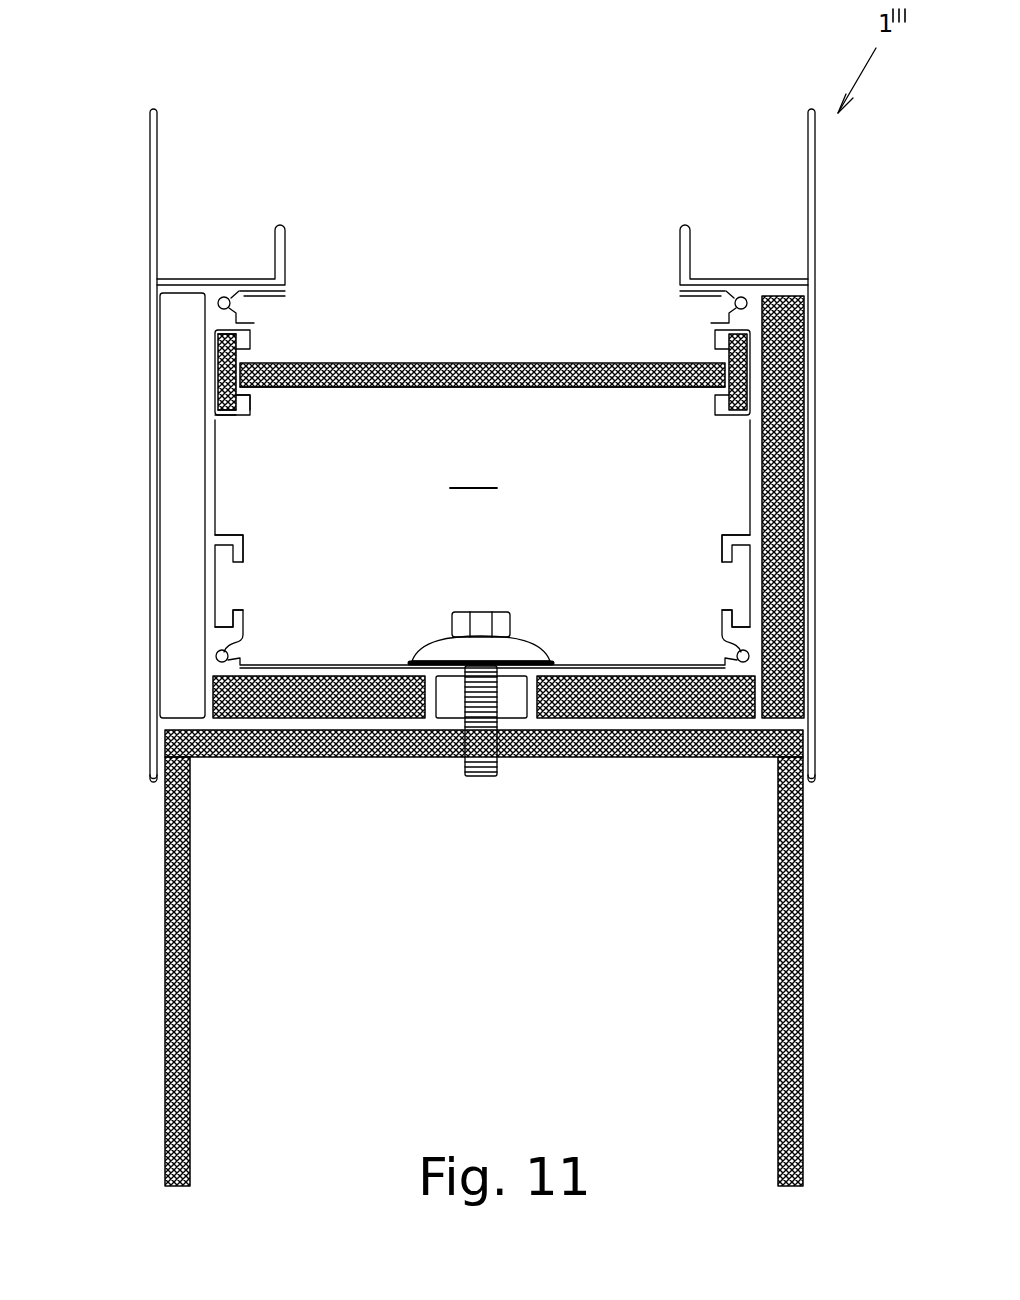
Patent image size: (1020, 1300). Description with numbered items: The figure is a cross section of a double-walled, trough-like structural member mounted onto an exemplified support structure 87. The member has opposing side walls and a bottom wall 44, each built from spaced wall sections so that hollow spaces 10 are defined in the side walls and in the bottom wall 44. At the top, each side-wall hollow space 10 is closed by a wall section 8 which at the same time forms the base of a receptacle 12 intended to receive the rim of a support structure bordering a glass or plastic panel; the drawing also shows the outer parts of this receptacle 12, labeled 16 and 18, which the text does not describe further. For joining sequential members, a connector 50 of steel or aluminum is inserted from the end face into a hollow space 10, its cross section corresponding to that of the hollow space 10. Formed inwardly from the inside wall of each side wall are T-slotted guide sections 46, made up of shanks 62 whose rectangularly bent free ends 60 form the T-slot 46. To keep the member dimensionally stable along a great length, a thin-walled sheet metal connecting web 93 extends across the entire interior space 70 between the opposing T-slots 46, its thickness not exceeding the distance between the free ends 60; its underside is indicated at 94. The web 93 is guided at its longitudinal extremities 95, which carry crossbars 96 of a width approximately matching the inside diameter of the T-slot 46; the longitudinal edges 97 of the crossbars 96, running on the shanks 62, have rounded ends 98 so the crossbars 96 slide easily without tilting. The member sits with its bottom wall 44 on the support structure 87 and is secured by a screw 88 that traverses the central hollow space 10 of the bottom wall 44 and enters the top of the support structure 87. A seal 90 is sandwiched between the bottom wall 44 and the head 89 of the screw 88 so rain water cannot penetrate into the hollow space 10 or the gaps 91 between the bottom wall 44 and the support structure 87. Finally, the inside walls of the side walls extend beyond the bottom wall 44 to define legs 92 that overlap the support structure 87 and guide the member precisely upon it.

The wall section 8 is at (178, 295).
The hollow space 10 is at (178, 505).
The receptacle 12 is at (217, 277).
The lip 16 is at (283, 232).
The outer channel 18 is at (152, 148).
The bottom wall 44 is at (302, 670).
The T-slotted guide section 46 is at (255, 323).
The connector 50 is at (790, 442).
The free end 60 is at (250, 410).
The shank 62 is at (240, 538).
The interior space 70 is at (482, 542).
The support structure 87 is at (780, 852).
The screw 88 is at (490, 612).
The head 89 is at (441, 648).
The seal 90 is at (552, 663).
The gap 91 is at (335, 732).
The leg 92 is at (153, 768).
The connecting web 93 is at (530, 362).
The cross bar underside 94 is at (597, 388).
The longitudinal extremity 95 is at (222, 375).
The crossbar 96 is at (222, 350).
The longitudinal edge 97 is at (216, 408).
The rounded end 98 is at (232, 410).